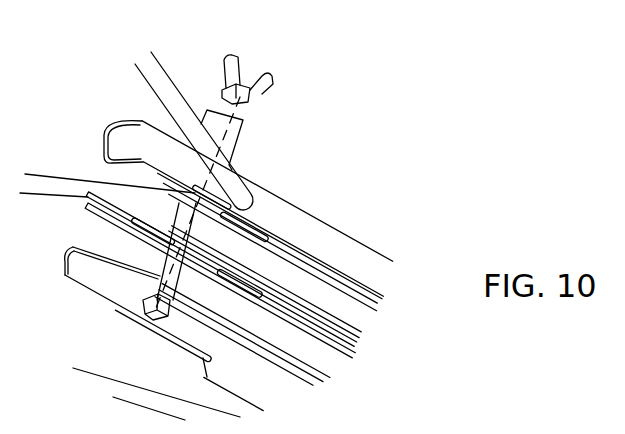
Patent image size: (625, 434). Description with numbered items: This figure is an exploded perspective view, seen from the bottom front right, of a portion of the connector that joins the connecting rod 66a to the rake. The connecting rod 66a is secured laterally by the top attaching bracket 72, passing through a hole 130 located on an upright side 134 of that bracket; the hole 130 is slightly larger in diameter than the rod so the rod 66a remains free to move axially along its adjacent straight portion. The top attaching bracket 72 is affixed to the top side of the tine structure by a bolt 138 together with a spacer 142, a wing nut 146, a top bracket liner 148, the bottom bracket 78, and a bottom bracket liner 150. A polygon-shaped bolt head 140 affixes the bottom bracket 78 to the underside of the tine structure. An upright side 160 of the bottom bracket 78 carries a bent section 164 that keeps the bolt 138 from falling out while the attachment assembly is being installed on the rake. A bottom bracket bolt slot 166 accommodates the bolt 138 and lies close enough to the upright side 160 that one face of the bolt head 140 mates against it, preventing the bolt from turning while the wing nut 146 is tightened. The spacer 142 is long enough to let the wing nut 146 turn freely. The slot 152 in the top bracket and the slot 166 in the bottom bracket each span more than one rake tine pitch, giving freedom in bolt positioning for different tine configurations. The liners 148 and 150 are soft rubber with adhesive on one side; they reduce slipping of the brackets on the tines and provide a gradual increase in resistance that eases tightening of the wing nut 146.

The connecting rod 66a is at (173, 78).
The hole 130 is at (142, 143).
The wing nut 146 is at (273, 77).
The spacer 142 is at (248, 120).
The upright side 134 is at (272, 210).
The slot 152 is at (270, 242).
The top attaching bracket 72 is at (366, 263).
The bolt 138 is at (163, 262).
The upright side 160 is at (103, 275).
The bolt head 140 is at (143, 297).
The bent section 164 is at (183, 340).
The bottom bracket bolt slot 166 is at (233, 333).
The top bracket liner 148 is at (352, 325).
The bottom bracket liner 150 is at (335, 350).
The bottom bracket 78 is at (281, 395).